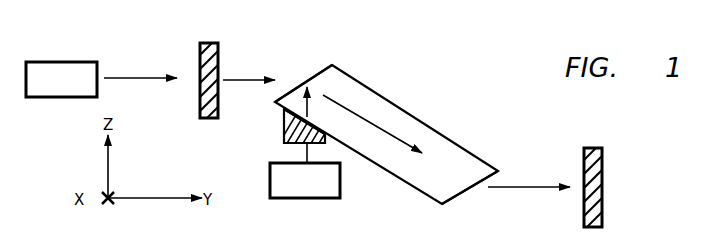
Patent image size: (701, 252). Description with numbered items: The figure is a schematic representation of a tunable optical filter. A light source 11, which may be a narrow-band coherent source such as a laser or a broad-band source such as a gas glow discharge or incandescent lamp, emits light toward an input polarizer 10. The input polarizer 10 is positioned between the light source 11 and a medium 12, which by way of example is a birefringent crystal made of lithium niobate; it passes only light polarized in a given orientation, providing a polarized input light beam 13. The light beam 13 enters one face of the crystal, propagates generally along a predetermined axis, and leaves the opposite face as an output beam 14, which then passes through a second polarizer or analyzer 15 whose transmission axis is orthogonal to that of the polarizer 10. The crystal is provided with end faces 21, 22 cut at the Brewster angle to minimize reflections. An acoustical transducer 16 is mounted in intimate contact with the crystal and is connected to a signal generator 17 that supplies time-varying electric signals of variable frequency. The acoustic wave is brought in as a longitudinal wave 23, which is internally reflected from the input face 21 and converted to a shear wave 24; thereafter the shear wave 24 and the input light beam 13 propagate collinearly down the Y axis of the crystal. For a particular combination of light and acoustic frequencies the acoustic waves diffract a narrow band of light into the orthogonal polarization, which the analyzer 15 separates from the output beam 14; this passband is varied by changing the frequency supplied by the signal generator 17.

The input polarizer 10 is at (220, 55).
The light source 11 is at (60, 70).
The medium 12 is at (448, 157).
The polarized input light beam 13 is at (238, 80).
The output beam 14 is at (523, 188).
The analyzer 15 is at (593, 153).
The acoustical transducer 16 is at (283, 133).
The signal generator 17 is at (340, 185).
The input face 21 is at (315, 75).
The end face 22 is at (452, 207).
The longitudinal wave 23 is at (283, 112).
The shear wave 24 is at (383, 128).